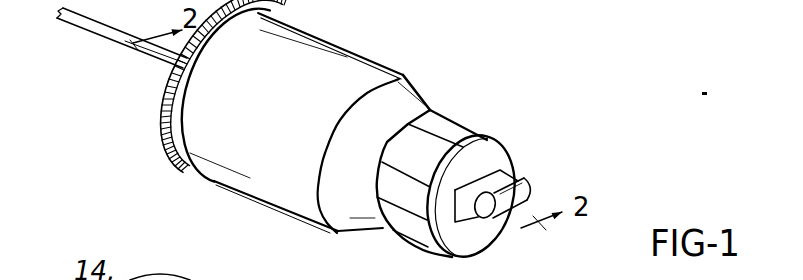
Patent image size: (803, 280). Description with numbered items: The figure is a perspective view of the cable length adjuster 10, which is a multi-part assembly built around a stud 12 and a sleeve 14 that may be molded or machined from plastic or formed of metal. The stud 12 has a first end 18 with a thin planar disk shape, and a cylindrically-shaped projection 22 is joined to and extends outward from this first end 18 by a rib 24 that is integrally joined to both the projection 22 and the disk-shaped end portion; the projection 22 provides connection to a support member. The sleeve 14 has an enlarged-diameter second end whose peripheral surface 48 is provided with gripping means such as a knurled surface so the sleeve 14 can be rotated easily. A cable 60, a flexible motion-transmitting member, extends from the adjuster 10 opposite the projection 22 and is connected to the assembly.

The pressure transducer assembly 10 is at (405, 18).
The connector knob / coupling member 12 is at (492, 156).
The housing body 14 is at (375, 69).
The end face plate 18 is at (450, 250).
The pin / shaft 22 is at (518, 181).
The key block 24 is at (463, 216).
The knurled ring 48 is at (262, 10).
The cable 60 is at (83, 25).